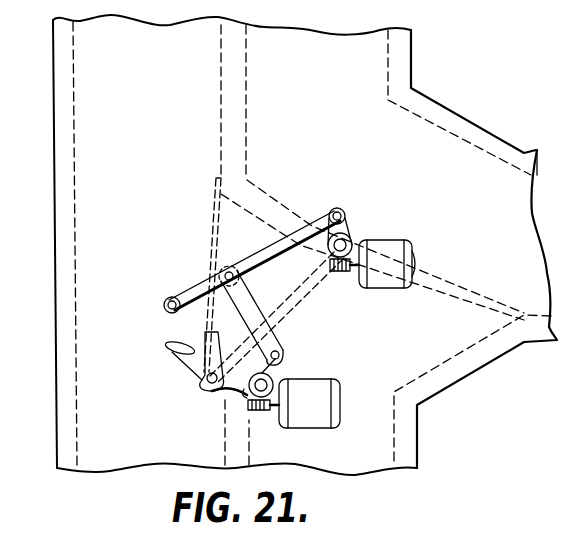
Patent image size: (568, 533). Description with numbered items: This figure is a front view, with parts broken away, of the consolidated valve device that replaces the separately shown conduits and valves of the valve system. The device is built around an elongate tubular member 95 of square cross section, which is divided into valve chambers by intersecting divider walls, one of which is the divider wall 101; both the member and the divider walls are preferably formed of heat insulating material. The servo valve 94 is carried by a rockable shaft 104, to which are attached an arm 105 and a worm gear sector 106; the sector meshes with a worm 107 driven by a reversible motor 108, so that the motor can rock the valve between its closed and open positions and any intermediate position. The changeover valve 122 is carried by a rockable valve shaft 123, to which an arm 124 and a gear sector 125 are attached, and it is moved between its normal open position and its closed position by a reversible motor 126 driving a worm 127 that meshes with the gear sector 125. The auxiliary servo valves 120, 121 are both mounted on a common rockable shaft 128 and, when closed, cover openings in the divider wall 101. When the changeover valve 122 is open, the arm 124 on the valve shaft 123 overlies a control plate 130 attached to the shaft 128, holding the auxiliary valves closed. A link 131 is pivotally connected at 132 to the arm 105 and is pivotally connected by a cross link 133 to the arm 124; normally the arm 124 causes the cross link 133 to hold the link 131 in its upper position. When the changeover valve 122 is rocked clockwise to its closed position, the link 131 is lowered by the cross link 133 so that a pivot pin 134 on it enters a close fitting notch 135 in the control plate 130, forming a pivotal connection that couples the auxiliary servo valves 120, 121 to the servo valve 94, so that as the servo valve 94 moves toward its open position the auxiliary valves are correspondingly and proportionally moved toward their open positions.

The servo valve 94 is at (458, 278).
The elongate tubular member 95 is at (417, 61).
The divider wall 101 is at (246, 124).
The rockable shaft 104 is at (353, 239).
The arm 105 is at (354, 229).
The worm gear sector 106 is at (332, 271).
The worm 107 is at (348, 275).
The reversible motor 108 is at (412, 249).
The auxiliary servo valve 120 is at (176, 275).
The auxiliary servo valve 121 is at (210, 241).
The changeover valve 122 is at (285, 320).
The rockable valve shaft 123 is at (288, 378).
The arm 124 is at (254, 367).
The gear sector 125 is at (245, 394).
The reversible motor 126 is at (340, 382).
The worm 127 is at (258, 412).
The common rockable shaft 128 is at (206, 388).
The control plate 130 is at (200, 360).
The link 131 is at (297, 232).
The pivotal connection 132 is at (337, 208).
The cross link 133 is at (240, 277).
The pivot pin 134 is at (168, 297).
The notch 135 is at (165, 346).